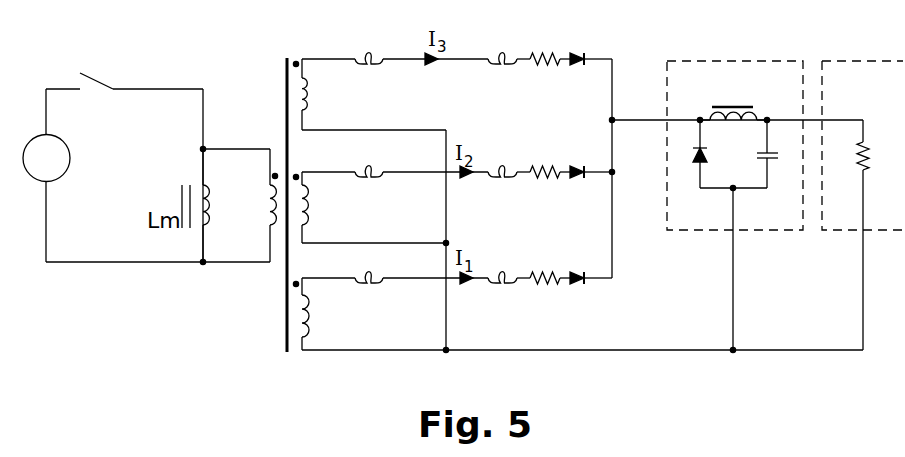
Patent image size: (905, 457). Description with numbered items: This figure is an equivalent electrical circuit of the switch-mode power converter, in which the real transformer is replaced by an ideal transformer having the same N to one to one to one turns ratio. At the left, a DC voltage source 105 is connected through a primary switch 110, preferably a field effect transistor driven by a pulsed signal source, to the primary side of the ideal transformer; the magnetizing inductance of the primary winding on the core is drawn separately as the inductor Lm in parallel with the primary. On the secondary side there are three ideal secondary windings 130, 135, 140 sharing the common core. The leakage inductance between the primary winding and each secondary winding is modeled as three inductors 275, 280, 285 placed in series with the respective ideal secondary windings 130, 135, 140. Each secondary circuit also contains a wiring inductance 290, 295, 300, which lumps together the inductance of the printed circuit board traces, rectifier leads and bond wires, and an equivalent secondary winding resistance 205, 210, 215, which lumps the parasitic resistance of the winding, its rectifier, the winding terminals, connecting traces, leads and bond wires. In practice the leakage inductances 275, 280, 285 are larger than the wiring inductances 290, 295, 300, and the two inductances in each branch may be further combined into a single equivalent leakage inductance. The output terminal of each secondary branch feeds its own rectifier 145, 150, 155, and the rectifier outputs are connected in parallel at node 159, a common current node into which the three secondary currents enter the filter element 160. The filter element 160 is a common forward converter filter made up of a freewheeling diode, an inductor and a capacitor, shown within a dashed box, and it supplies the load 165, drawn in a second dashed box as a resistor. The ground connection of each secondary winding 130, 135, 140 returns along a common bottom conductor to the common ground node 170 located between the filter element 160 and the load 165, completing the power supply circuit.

The DC voltage source 105 is at (58, 173).
The primary switch 110 is at (93, 92).
The secondary winding 130 is at (297, 318).
The secondary winding 135 is at (290, 235).
The secondary winding 140 is at (297, 97).
The rectifier 145 is at (585, 283).
The rectifier 150 is at (577, 168).
The rectifier 155 is at (582, 55).
The node 159 is at (615, 118).
The filter element 160 is at (722, 58).
The load 165 is at (862, 58).
The common ground node 170 is at (763, 352).
The equivalent secondary winding resistance 205 is at (545, 285).
The equivalent secondary winding resistance 210 is at (545, 179).
The equivalent secondary winding resistance 215 is at (545, 66).
The leakage inductance 275 is at (370, 283).
The leakage inductance 280 is at (370, 177).
The leakage inductance 285 is at (370, 64).
The wiring inductance 290 is at (500, 275).
The wiring inductance 295 is at (500, 168).
The wiring inductance 300 is at (500, 55).